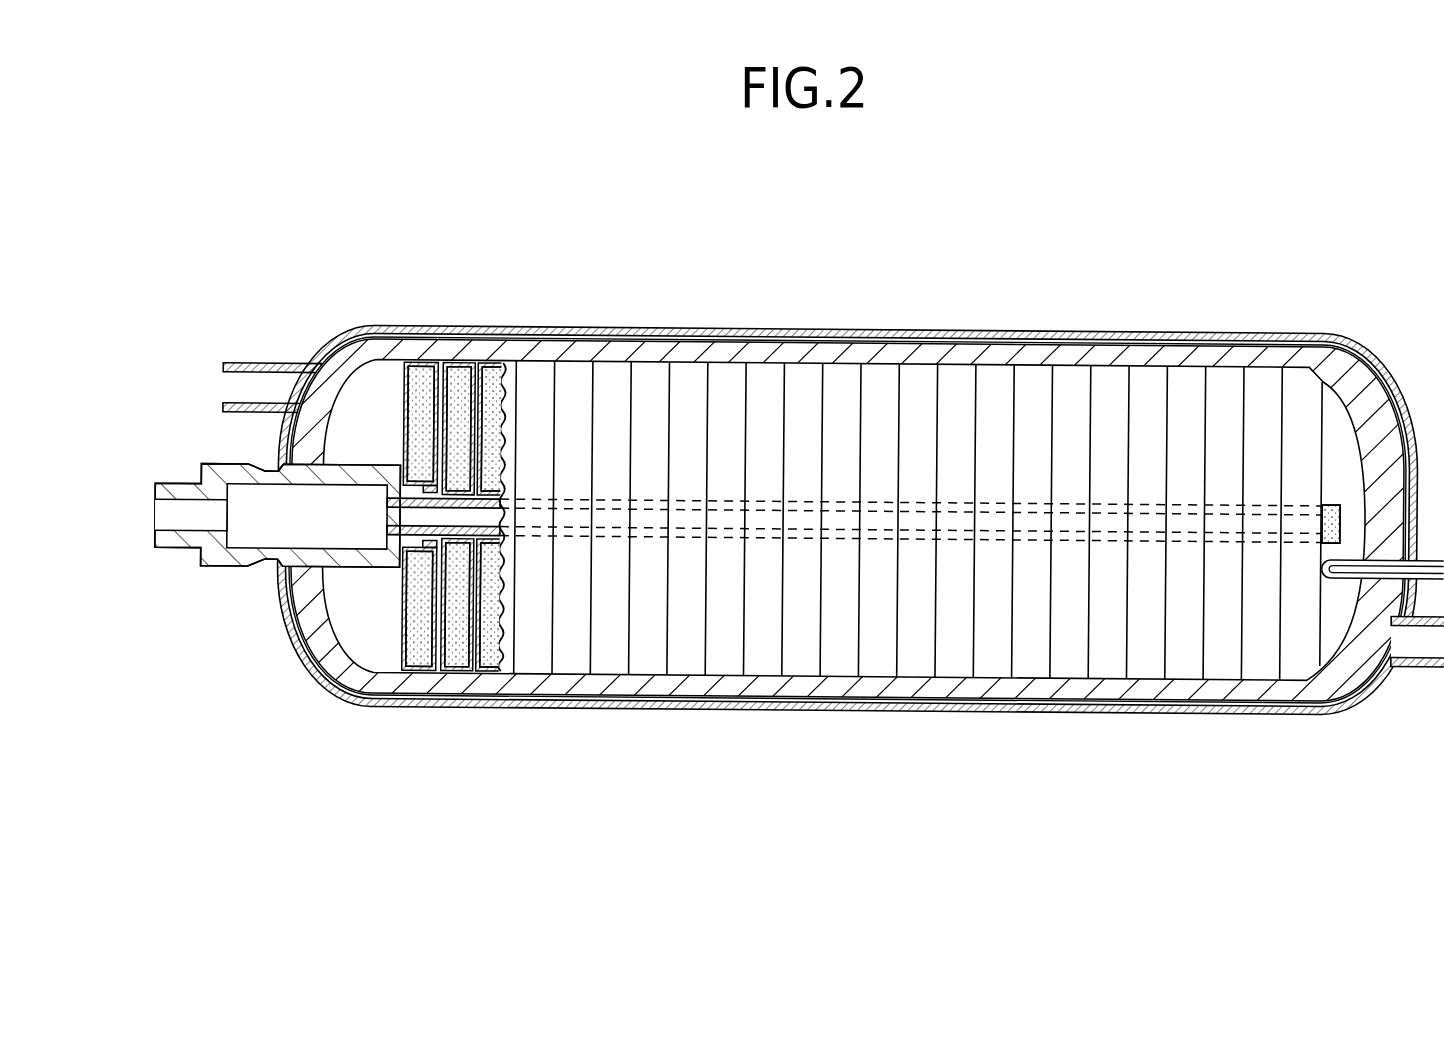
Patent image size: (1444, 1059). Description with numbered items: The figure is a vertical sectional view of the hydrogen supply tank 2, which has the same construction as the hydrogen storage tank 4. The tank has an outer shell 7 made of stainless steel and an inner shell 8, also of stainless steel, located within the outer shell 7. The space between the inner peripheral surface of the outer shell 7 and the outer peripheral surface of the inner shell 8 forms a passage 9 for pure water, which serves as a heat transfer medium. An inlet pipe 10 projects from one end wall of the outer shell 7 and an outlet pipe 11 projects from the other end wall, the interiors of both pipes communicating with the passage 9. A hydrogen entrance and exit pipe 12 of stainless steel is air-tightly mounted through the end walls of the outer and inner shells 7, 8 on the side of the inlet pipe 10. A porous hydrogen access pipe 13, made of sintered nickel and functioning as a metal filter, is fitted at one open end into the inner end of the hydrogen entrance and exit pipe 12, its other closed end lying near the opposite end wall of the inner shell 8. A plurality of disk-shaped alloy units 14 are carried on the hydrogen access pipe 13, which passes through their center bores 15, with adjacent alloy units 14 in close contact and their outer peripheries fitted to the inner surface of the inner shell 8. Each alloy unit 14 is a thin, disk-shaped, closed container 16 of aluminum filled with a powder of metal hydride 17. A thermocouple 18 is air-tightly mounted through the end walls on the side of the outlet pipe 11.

The hydrogen supply tank 2 is at (722, 501).
The hydrogen storage tank 4 is at (722, 517).
The outer shell 7 is at (628, 334).
The inner shell 8 is at (720, 351).
The passage 9 is at (535, 339).
The inlet pipe 10 is at (265, 363).
The outlet pipe 11 is at (1425, 667).
The hydrogen entrance and exit pipe 12 is at (222, 470).
The porous hydrogen access pipe 13 is at (466, 495).
The alloy unit 14 is at (459, 678).
The center bore 15 is at (476, 518).
The closed container 16 is at (470, 676).
The metal hydride 17 is at (450, 643).
The thermocouple 18 is at (1360, 557).